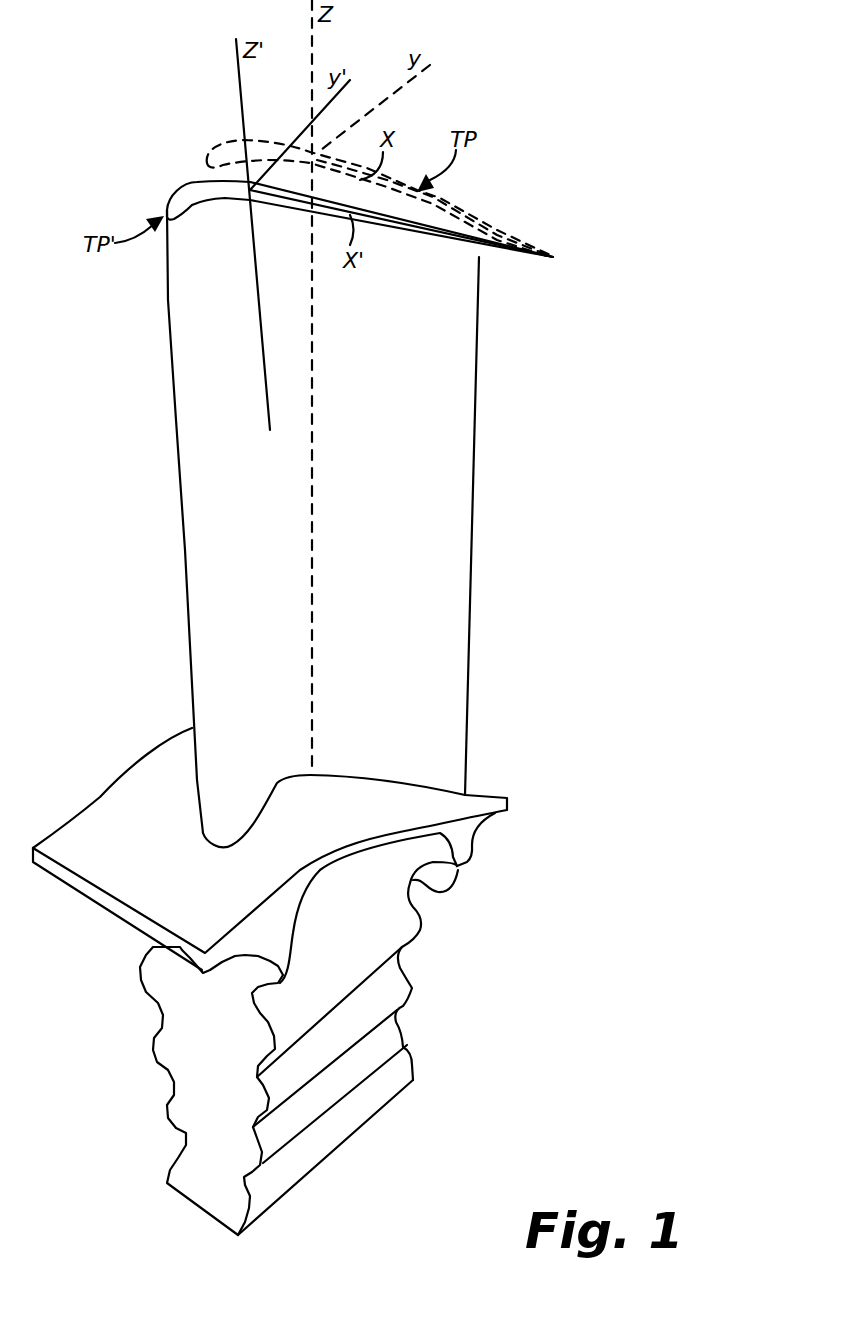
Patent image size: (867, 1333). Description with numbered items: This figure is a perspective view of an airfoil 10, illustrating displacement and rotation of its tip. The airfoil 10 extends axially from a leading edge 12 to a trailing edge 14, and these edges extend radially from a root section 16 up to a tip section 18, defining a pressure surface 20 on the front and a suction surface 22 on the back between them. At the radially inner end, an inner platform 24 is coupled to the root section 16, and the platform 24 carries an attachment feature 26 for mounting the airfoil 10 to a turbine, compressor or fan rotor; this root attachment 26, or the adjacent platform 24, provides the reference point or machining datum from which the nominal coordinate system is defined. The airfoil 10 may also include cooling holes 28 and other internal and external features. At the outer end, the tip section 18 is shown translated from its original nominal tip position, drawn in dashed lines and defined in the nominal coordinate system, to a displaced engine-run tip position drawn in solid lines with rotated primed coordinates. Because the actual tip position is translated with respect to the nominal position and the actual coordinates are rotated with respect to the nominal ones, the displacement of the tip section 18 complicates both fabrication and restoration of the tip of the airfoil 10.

The airfoil 10 is at (393, 576).
The leading edge 12 is at (200, 492).
The trailing edge 14 is at (480, 363).
The root section 16 is at (387, 775).
The tip section 18 is at (190, 197).
The pressure surface 20 is at (236, 655).
The suction surface 22 is at (176, 610).
The inner platform 24 is at (117, 863).
The attachment feature 26 is at (213, 1065).
The cooling holes 28 is at (357, 437).